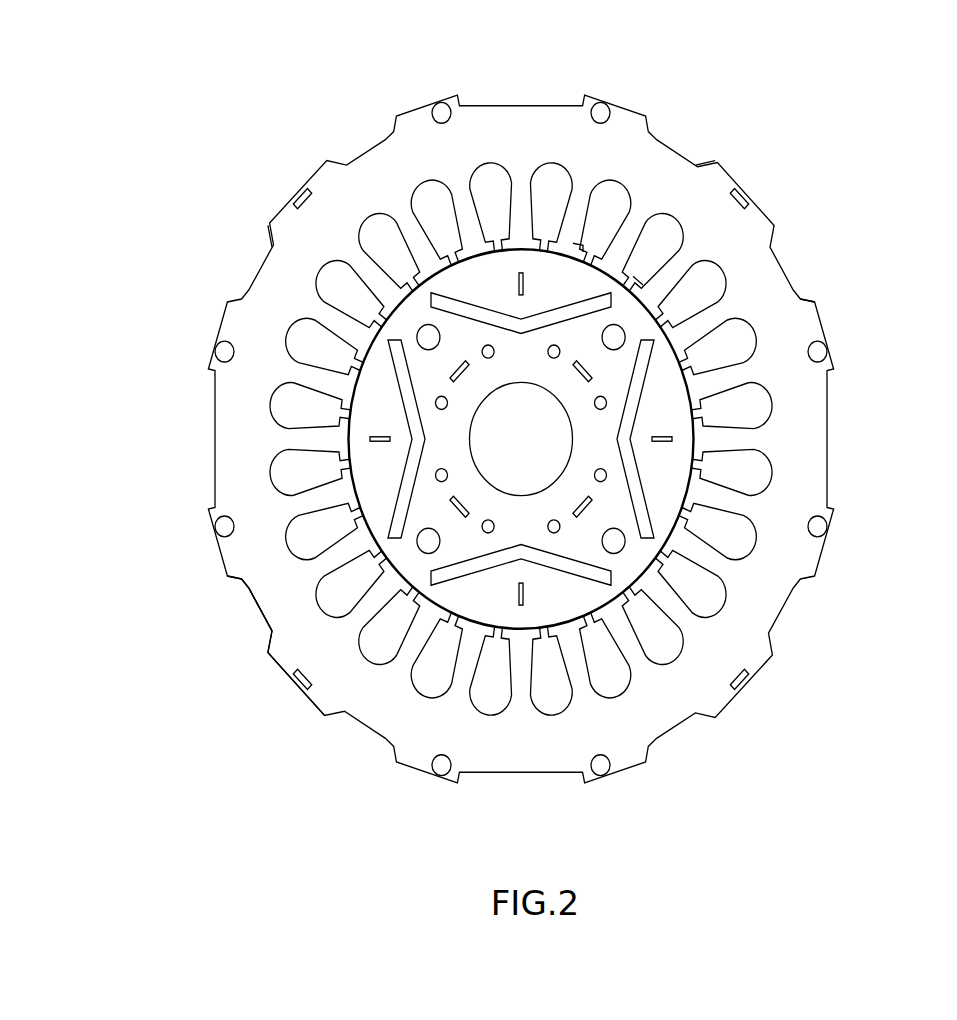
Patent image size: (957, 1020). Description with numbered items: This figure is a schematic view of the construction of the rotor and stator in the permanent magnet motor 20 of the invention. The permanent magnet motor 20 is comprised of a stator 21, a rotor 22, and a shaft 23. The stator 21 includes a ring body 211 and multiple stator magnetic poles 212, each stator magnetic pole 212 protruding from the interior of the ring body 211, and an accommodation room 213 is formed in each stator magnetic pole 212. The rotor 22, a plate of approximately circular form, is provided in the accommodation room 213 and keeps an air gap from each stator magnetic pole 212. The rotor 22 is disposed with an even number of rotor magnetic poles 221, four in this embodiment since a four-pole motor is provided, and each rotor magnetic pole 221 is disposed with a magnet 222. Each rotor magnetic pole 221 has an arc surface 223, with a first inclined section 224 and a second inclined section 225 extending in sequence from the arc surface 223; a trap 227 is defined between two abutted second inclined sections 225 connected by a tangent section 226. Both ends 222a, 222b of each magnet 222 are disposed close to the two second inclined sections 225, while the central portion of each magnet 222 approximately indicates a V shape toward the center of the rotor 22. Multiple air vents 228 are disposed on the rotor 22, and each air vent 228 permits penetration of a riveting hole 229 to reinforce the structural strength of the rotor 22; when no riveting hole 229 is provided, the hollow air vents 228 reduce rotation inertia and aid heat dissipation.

The permanent magnet motor 20 is at (888, 57).
The stator 21 is at (777, 607).
The ring body 211 is at (740, 657).
The stator magnetic pole 212 is at (225, 572).
The accommodation room 213 is at (268, 636).
The rotor 22 is at (623, 467).
The rotor magnetic pole 221 is at (487, 272).
The magnet 222 is at (395, 325).
The end of magnet 222a is at (432, 296).
The end of magnet 222b is at (582, 262).
The arc surface 223 is at (530, 247).
The first inclined section 224 is at (617, 287).
The second inclined section 225 is at (375, 257).
The tangent section 226 is at (633, 295).
The trap 227 is at (640, 330).
The air vent 228 is at (553, 526).
The riveting hole 229 is at (613, 543).
The shaft 23 is at (497, 475).